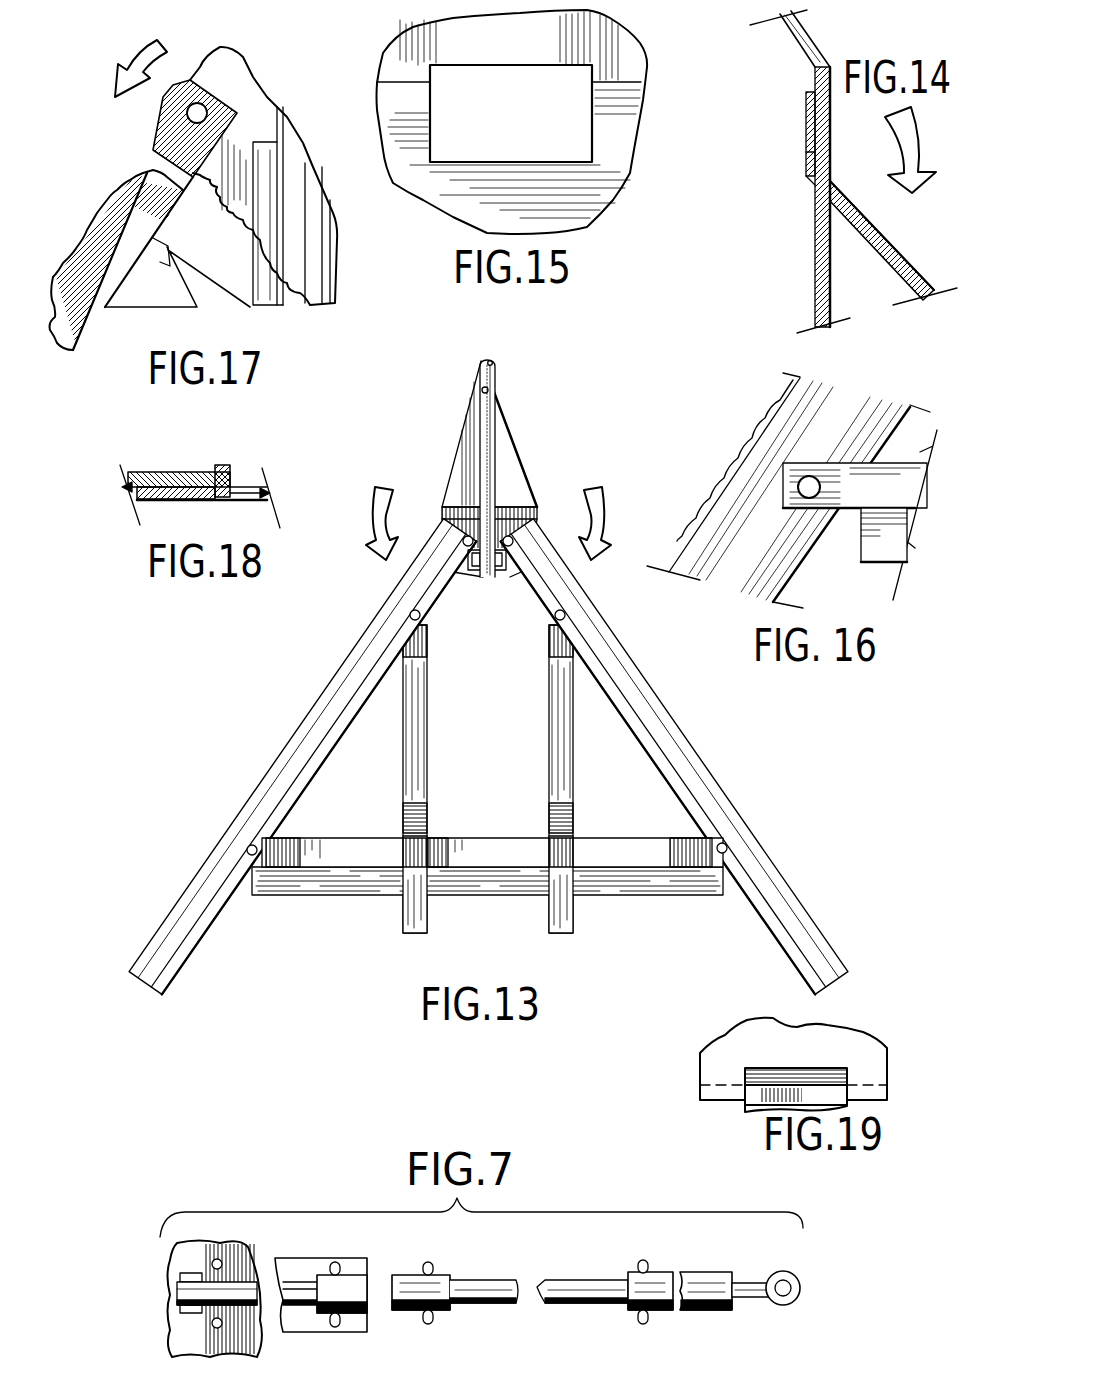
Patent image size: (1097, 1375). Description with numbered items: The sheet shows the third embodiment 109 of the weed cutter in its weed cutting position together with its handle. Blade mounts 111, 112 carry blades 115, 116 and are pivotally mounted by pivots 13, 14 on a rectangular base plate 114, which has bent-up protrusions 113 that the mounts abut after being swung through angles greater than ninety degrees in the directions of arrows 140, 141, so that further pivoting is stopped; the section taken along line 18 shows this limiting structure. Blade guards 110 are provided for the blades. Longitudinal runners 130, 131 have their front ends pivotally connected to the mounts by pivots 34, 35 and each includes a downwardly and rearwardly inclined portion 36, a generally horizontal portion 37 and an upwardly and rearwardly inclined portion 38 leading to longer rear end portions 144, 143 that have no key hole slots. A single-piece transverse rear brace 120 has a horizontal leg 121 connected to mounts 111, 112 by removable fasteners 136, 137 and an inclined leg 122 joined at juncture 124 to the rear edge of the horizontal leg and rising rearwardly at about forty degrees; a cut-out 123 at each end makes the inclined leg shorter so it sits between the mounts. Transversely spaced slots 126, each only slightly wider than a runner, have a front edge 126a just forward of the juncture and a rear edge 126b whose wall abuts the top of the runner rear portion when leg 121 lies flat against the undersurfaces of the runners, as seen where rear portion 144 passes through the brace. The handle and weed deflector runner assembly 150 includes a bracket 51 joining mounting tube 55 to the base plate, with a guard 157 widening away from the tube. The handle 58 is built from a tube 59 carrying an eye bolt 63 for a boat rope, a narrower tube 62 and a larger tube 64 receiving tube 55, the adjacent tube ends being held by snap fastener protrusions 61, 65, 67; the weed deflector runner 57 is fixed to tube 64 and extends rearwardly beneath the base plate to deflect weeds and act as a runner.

In FIG. 13, the pivot 13 is at (465, 538).
In FIG. 17, the pivot 13 is at (195, 116).
In FIG. 7, the pivot 13 is at (217, 1258).
In FIG. 13, the pivot 14 is at (512, 538).
In FIG. 7, the pivot 14 is at (222, 1326).
In FIG. 17, the section line 18 is at (80, 200).
In FIG. 13, the pivot 34 is at (410, 615).
In FIG. 13, the pivot 35 is at (565, 615).
In FIG. 13, the downwardly and rearwardly inclined portion 36 is at (545, 640).
In FIG. 13, the horizontal portion 37 is at (420, 737).
In FIG. 13, the upwardly and rearwardly inclined portion 38 is at (548, 817).
In FIG. 14, the upwardly and rearwardly inclined portion 38 is at (788, 30).
In FIG. 19, the upwardly and rearwardly inclined portion 38 is at (756, 1095).
In FIG. 7, the bracket 51 is at (180, 1277).
In FIG. 13, the mounting tube 55 is at (492, 468).
In FIG. 17, the mounting tube 55 is at (310, 212).
In FIG. 7, the mounting tube 55 is at (237, 1287).
In FIG. 7, the weed deflector runner 57 is at (300, 1265).
In FIG. 7, the handle 58 is at (598, 1272).
In FIG. 7, the tube 59 is at (693, 1312).
In FIG. 7, the protrusions 61 is at (645, 1261).
In FIG. 7, the tube 62 is at (498, 1282).
In FIG. 7, the eye bolt 63 is at (757, 1300).
In FIG. 7, the tube 64 is at (358, 1313).
In FIG. 7, the protrusions 65 is at (432, 1262).
In FIG. 7, the protrusions 67 is at (337, 1328).
In FIG. 13, the third embodiment 109 is at (752, 812).
In FIG. 13, the blade guards 110 is at (683, 742).
In FIG. 13, the blade mount 111 is at (320, 752).
In FIG. 17, the blade mount 111 is at (73, 350).
In FIG. 18, the blade mount 111 is at (165, 470).
In FIG. 16, the blade mount 111 is at (734, 574).
In FIG. 13, the blade mount 112 is at (640, 723).
In FIG. 17, the protrusions 113 is at (148, 257).
In FIG. 18, the protrusions 113 is at (222, 464).
In FIG. 13, the base plate 114 is at (470, 532).
In FIG. 17, the base plate 114 is at (243, 77).
In FIG. 18, the base plate 114 is at (182, 497).
In FIG. 13, the blade 115 is at (360, 679).
In FIG. 16, the blade 115 is at (733, 470).
In FIG. 13, the blade 116 is at (705, 792).
In FIG. 13, the transverse rear brace 120 is at (722, 900).
In FIG. 14, the transverse rear brace 120 is at (866, 250).
In FIG. 13, the horizontal leg 121 is at (526, 838).
In FIG. 15, the horizontal leg 121 is at (620, 43).
In FIG. 14, the horizontal leg 121 is at (806, 102).
In FIG. 16, the horizontal leg 121 is at (902, 481).
In FIG. 19, the horizontal leg 121 is at (712, 1085).
In FIG. 13, the inclined leg 122 is at (316, 898).
In FIG. 15, the inclined leg 122 is at (607, 182).
In FIG. 14, the inclined leg 122 is at (917, 286).
In FIG. 16, the inclined leg 122 is at (890, 553).
In FIG. 19, the inclined leg 122 is at (745, 1042).
In FIG. 16, the cut-out 123 is at (860, 530).
In FIG. 13, the juncture 124 is at (660, 866).
In FIG. 15, the juncture 124 is at (618, 83).
In FIG. 13, the slots 126 is at (403, 873).
In FIG. 15, the slots 126 is at (600, 128).
In FIG. 15, the front edge 126a is at (486, 64).
In FIG. 14, the front edge 126a is at (806, 162).
In FIG. 19, the front edge 126a is at (745, 1110).
In FIG. 15, the rear edge 126b is at (552, 161).
In FIG. 14, the rear edge 126b is at (833, 184).
In FIG. 19, the rear edge 126b is at (845, 1075).
In FIG. 14, the runner 130 is at (825, 36).
In FIG. 13, the runner 131 is at (552, 752).
In FIG. 13, the removable fastener 136 is at (248, 847).
In FIG. 16, the removable fastener 136 is at (809, 476).
In FIG. 13, the removable fastener 137 is at (728, 848).
In FIG. 13, the arrow 140 is at (372, 520).
In FIG. 17, the arrow 140 is at (145, 48).
In FIG. 13, the arrow 141 is at (613, 520).
In FIG. 13, the rear end portion 143 is at (560, 935).
In FIG. 14, the rear end portion 143 is at (915, 147).
In FIG. 13, the rear end portion 144 is at (425, 920).
In FIG. 14, the rear end portion 144 is at (824, 130).
In FIG. 19, the rear end portion 144 is at (830, 1068).
In FIG. 13, the handle and weed deflector runner assembly 150 is at (497, 564).
In FIG. 17, the handle and weed deflector runner assembly 150 is at (265, 150).
In FIG. 13, the weed deflector runner 157 is at (468, 446).